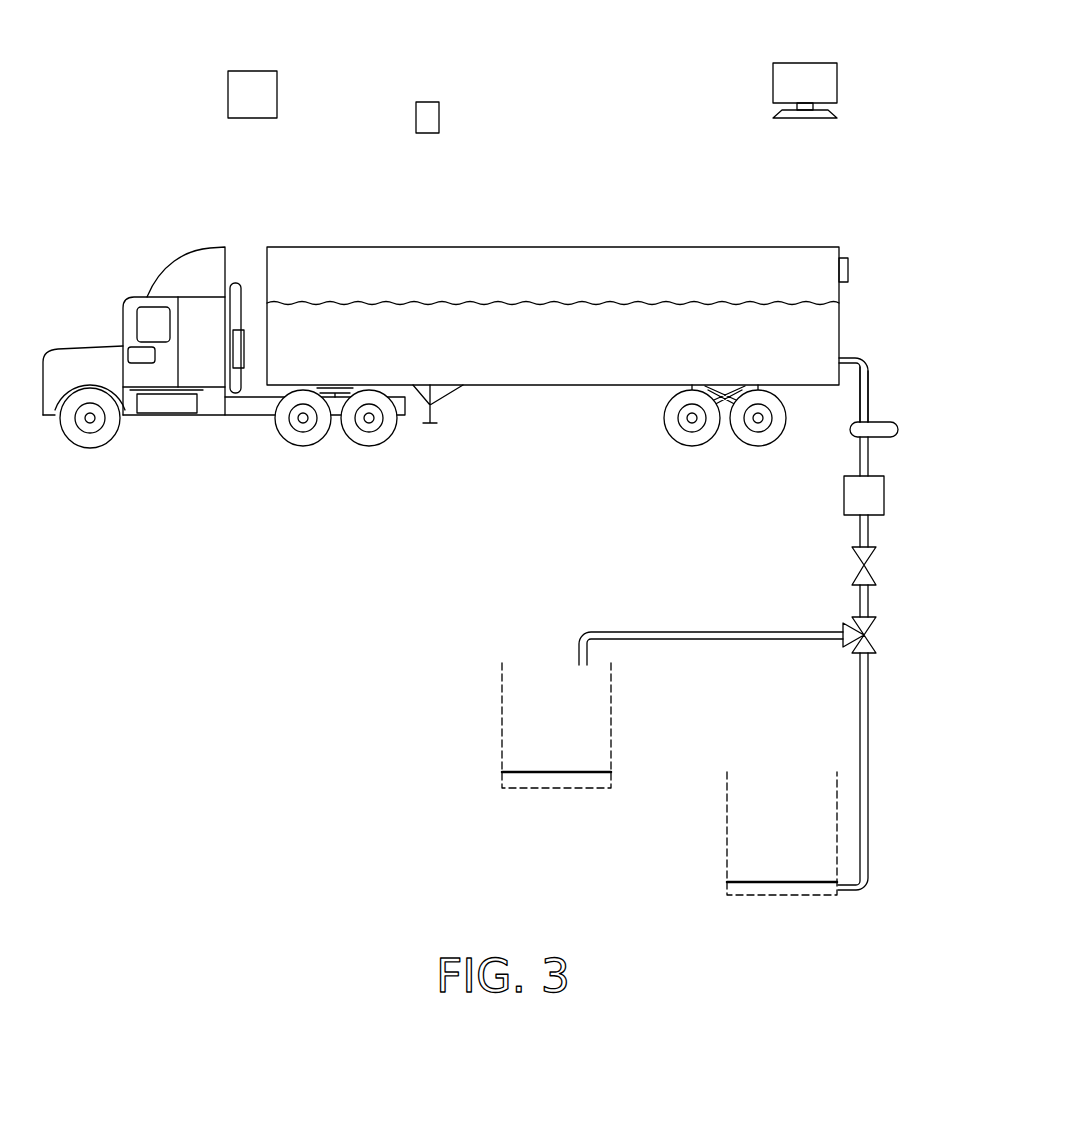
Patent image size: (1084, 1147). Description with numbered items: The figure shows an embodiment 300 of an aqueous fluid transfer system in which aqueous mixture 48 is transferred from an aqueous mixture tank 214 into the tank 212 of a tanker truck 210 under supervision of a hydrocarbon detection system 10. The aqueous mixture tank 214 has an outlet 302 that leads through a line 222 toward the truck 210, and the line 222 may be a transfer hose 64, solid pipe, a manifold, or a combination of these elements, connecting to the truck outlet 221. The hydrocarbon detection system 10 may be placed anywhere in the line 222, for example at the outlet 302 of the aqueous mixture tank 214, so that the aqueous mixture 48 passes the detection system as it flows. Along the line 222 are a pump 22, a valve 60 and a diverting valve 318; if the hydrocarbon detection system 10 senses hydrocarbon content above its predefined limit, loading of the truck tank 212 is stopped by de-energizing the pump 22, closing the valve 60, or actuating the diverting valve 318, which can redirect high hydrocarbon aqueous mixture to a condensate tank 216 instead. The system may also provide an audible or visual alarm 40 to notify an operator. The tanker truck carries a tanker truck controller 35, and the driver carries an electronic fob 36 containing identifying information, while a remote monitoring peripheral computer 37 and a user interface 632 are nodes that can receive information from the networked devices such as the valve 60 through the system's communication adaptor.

The embodiment 300 is at (122, 171).
The user interface 632 is at (258, 70).
The electronic fob 36 is at (429, 101).
The remote monitoring peripheral computer 37 is at (803, 62).
The tanker truck 210 is at (173, 257).
The tank 212 is at (352, 247).
The tanker truck controller 35 is at (138, 352).
The alarm 40 is at (850, 268).
The outlet 221 is at (841, 357).
The transfer hose 64 is at (870, 380).
The hydrocarbon detection system 10 is at (900, 428).
The pump 22 is at (886, 498).
The valve 60 is at (862, 567).
The line 222 is at (870, 600).
The diverting valve 318 is at (872, 635).
The outlet 302 is at (840, 895).
The condensate tank 216 is at (614, 726).
The aqueous mixture tank 214 is at (725, 817).
The aqueous mixture 48 is at (554, 770).